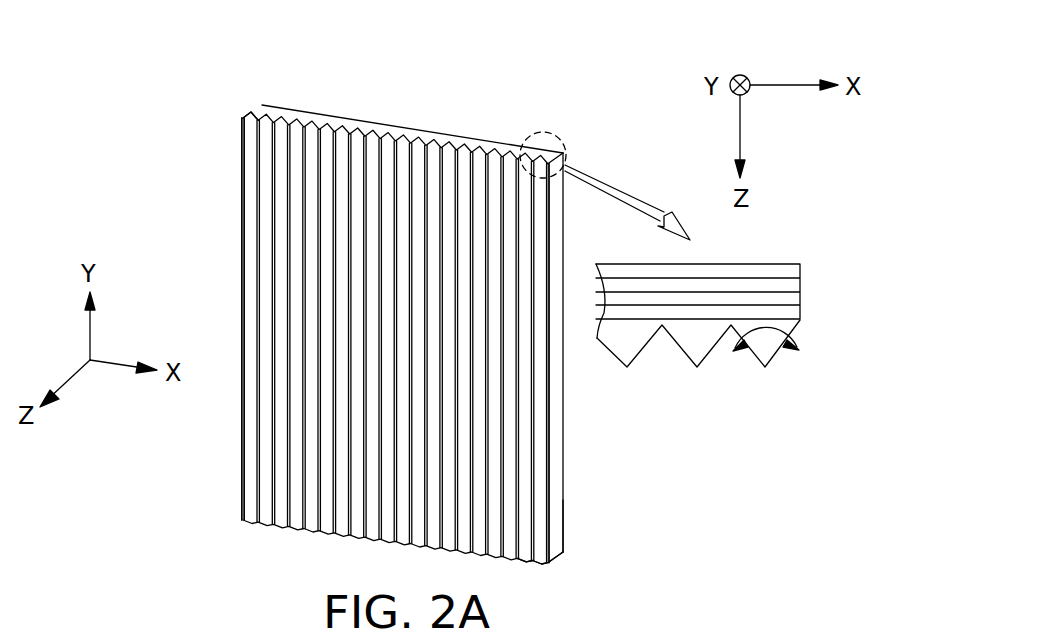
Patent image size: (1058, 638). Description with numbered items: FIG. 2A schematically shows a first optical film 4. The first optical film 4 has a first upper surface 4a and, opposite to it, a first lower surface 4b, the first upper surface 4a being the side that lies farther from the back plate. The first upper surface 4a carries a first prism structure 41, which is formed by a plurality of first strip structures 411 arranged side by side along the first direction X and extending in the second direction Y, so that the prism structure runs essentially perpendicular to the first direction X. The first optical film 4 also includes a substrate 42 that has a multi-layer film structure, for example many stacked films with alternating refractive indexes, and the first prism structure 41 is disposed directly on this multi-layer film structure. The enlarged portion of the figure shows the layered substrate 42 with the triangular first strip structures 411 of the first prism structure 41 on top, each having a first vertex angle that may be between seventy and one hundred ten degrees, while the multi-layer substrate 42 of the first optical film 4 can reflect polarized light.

The first optical film 4 is at (85, 89).
The first prism structure 41 is at (558, 62).
The first strip structures 411 is at (262, 108).
The substrate 42 is at (562, 227).
The first upper surface 4a is at (540, 565).
The first lower surface 4b is at (565, 542).